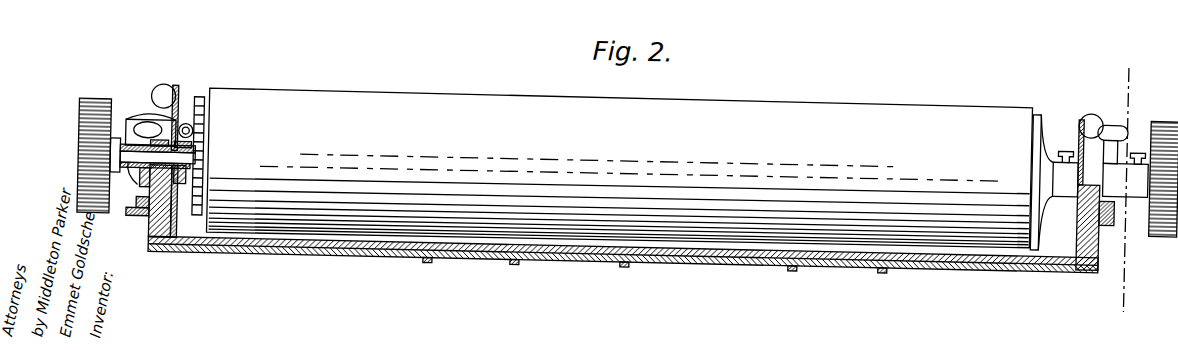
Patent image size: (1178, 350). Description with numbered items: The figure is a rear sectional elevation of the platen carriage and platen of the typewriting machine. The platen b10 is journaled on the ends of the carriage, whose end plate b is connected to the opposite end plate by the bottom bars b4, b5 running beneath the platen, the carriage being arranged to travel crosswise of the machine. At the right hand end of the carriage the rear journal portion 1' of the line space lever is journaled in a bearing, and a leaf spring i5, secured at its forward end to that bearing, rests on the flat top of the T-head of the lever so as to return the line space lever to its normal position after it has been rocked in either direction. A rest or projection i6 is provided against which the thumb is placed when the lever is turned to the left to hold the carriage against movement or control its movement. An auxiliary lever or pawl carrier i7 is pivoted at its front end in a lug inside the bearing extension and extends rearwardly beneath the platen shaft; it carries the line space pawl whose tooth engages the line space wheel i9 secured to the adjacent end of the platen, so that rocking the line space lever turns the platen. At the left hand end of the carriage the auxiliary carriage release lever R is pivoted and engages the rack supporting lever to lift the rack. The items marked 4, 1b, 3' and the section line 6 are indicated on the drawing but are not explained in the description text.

The frame / bearing standard 4 is at (147, 118).
The bearing 1' is at (141, 110).
The leaf spring i5 is at (157, 135).
The line space wheel i9 is at (196, 110).
The rest or projection i6 is at (193, 137).
The auxiliary lever or pawl carrier i7 is at (207, 180).
The clamp block 1b is at (142, 183).
The bolt 3' is at (128, 219).
The platen b10 is at (619, 169).
The bottom bar b4 is at (424, 262).
The bottom bar b5 is at (515, 262).
The section line 6 is at (1130, 193).
The auxiliary carriage release lever R is at (1118, 130).
The end plate b is at (1100, 228).